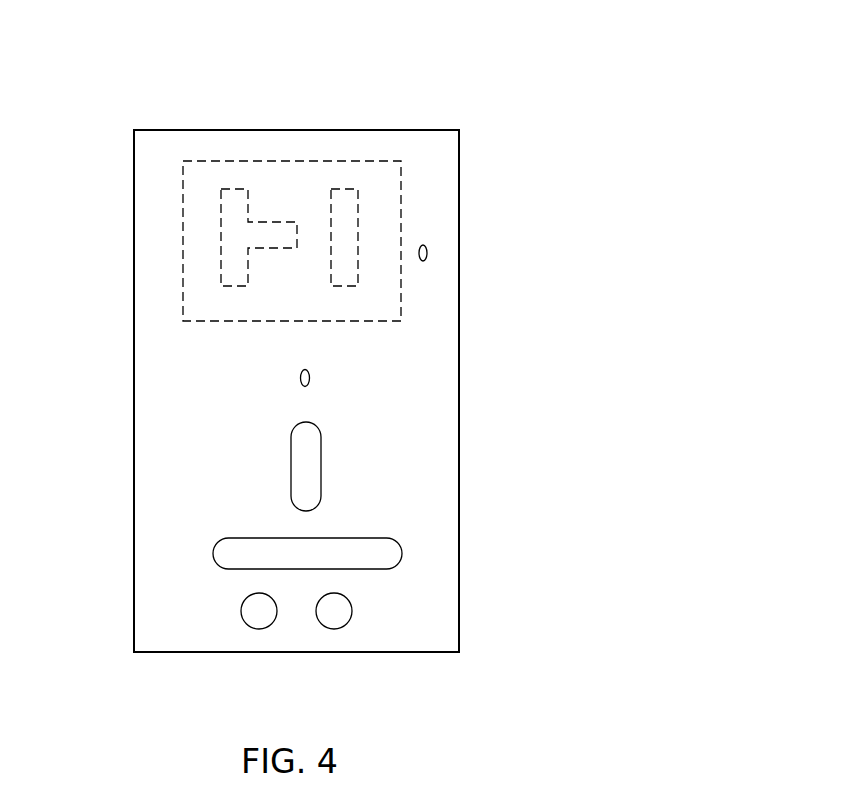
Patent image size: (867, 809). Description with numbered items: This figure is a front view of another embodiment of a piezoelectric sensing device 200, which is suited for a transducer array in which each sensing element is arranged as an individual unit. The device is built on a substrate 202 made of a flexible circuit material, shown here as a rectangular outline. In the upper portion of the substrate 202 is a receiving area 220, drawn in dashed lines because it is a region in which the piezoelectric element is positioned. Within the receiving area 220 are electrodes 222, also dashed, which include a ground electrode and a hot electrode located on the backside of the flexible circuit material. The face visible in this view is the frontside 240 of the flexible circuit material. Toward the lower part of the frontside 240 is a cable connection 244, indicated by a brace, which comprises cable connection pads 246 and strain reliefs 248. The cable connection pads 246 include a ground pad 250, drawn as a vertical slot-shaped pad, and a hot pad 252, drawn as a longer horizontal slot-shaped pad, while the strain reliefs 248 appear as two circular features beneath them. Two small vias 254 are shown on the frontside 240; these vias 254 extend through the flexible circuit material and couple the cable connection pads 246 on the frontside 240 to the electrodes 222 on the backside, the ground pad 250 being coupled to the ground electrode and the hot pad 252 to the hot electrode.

The piezoelectric sensing device 200 is at (449, 52).
The substrate 202 is at (366, 110).
The receiving area 220 is at (287, 161).
The electrodes 222 is at (233, 183).
The vias 254 is at (427, 253).
The cable connection 244 is at (100, 417).
The frontside 240 is at (414, 599).
The cable connection pads 246 is at (330, 475).
The ground pad 250 is at (322, 452).
The hot pad 252 is at (248, 537).
The strain reliefs 248 is at (258, 637).